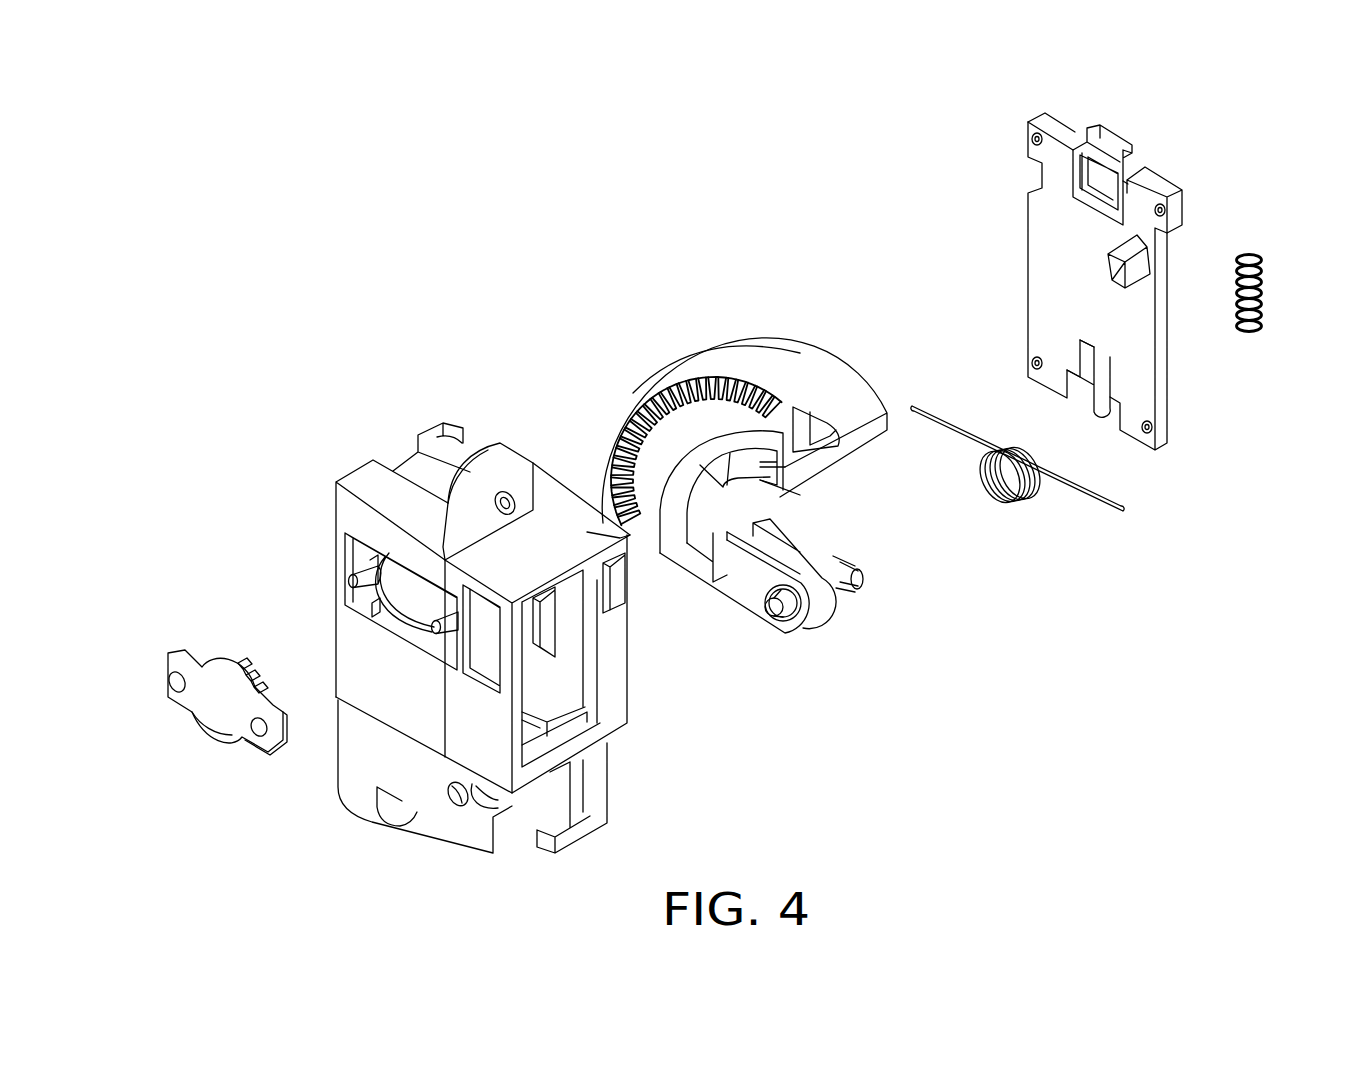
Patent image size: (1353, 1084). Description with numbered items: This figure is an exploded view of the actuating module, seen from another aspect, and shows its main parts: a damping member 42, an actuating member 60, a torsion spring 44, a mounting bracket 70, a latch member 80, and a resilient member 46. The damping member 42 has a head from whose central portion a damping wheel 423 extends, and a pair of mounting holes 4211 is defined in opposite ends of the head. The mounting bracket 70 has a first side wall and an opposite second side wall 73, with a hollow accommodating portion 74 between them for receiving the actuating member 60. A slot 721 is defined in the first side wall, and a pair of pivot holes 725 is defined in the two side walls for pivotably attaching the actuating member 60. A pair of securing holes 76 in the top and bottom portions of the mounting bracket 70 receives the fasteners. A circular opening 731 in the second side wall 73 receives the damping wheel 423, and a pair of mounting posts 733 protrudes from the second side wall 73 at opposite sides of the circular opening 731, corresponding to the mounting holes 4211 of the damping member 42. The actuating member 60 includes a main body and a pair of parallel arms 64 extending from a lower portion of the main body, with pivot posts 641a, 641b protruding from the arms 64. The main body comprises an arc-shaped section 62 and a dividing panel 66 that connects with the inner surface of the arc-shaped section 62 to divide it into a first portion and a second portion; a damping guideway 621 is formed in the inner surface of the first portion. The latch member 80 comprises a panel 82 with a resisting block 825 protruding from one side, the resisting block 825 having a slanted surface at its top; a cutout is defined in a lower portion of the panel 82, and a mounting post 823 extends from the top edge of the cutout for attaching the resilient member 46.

The damping member 42 is at (190, 712).
The damping wheel 423 is at (252, 660).
The mounting holes 4211 is at (258, 742).
The torsion spring 44 is at (1015, 502).
The resilient member 46 is at (1258, 258).
The actuating member 60 is at (683, 318).
The arc-shaped section 62 is at (740, 348).
The damping guideway 621 is at (653, 400).
The arms 64 is at (820, 600).
The pivot post 641a is at (857, 573).
The pivot post 641b is at (783, 618).
The dividing panel 66 is at (717, 412).
The mounting bracket 70 is at (385, 437).
The slot 721 is at (548, 617).
The pivot holes 725 is at (460, 792).
The second side wall 73 is at (355, 515).
The circular opening 731 is at (408, 595).
The mounting posts 733 is at (362, 577).
The hollow accommodating portion 74 is at (562, 675).
The securing holes 76 is at (533, 483).
The latch member 80 is at (985, 157).
The panel 82 is at (1058, 252).
The mounting post 823 is at (1097, 405).
The resisting block 825 is at (1127, 253).